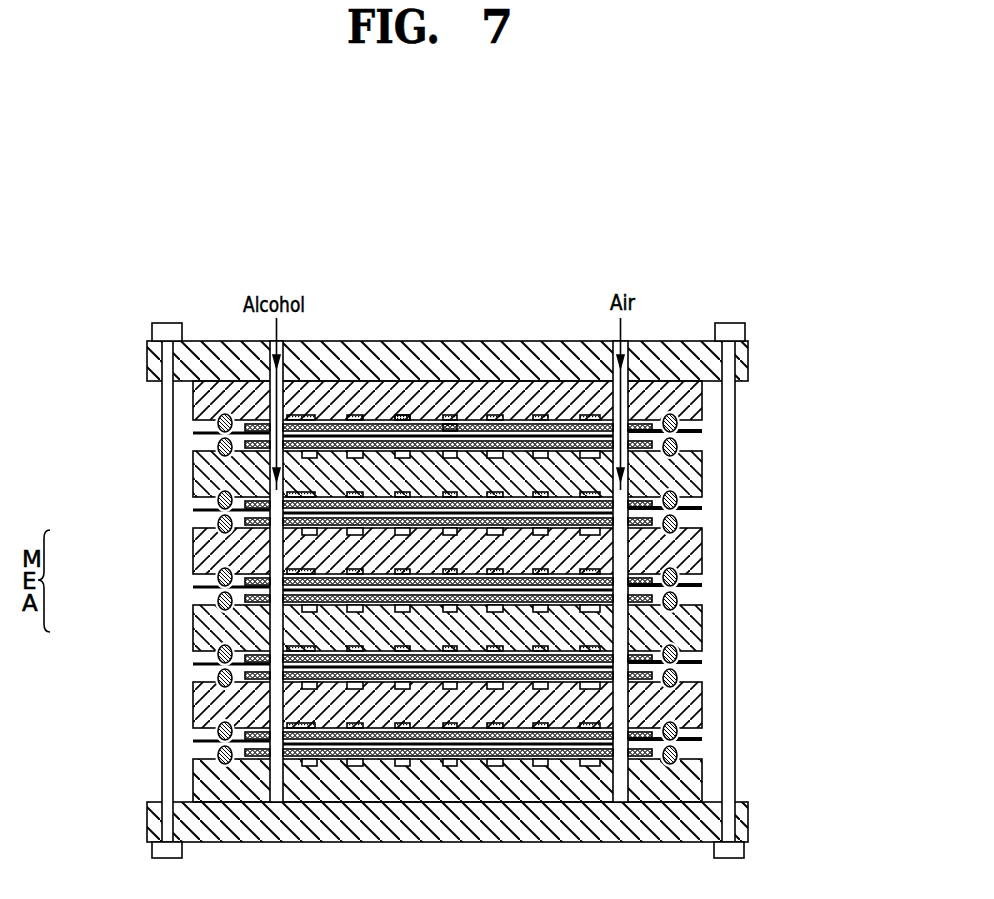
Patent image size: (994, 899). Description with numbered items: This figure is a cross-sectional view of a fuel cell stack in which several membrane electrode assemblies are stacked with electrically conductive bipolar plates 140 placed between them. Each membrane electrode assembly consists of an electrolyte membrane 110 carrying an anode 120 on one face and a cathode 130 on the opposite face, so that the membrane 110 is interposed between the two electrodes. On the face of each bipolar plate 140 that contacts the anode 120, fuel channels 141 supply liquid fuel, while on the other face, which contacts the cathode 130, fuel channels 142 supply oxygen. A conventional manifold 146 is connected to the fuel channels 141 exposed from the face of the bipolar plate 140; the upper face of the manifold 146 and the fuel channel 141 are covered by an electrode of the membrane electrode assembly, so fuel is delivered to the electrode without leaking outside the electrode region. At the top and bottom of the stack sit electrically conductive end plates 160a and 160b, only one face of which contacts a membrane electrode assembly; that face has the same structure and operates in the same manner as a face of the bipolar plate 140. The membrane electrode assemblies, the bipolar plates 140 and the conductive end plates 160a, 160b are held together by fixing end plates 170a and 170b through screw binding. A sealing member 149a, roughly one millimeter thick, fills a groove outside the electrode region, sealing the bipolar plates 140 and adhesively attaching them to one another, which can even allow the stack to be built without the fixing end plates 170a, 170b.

The fixing end plate 170a is at (745, 360).
The fixing end plate 170b is at (746, 820).
The electric conductive end plate 160a is at (706, 400).
The electric conductive end plate 160b is at (706, 782).
The bipolar plate 140 is at (706, 630).
The fuel channel 141 is at (405, 414).
The fuel channel 142 is at (448, 422).
The manifold 146 is at (312, 388).
The sealing member 149a is at (218, 447).
The anode 120 is at (252, 577).
The electrolyte membrane 110 is at (255, 590).
The cathode 130 is at (255, 604).